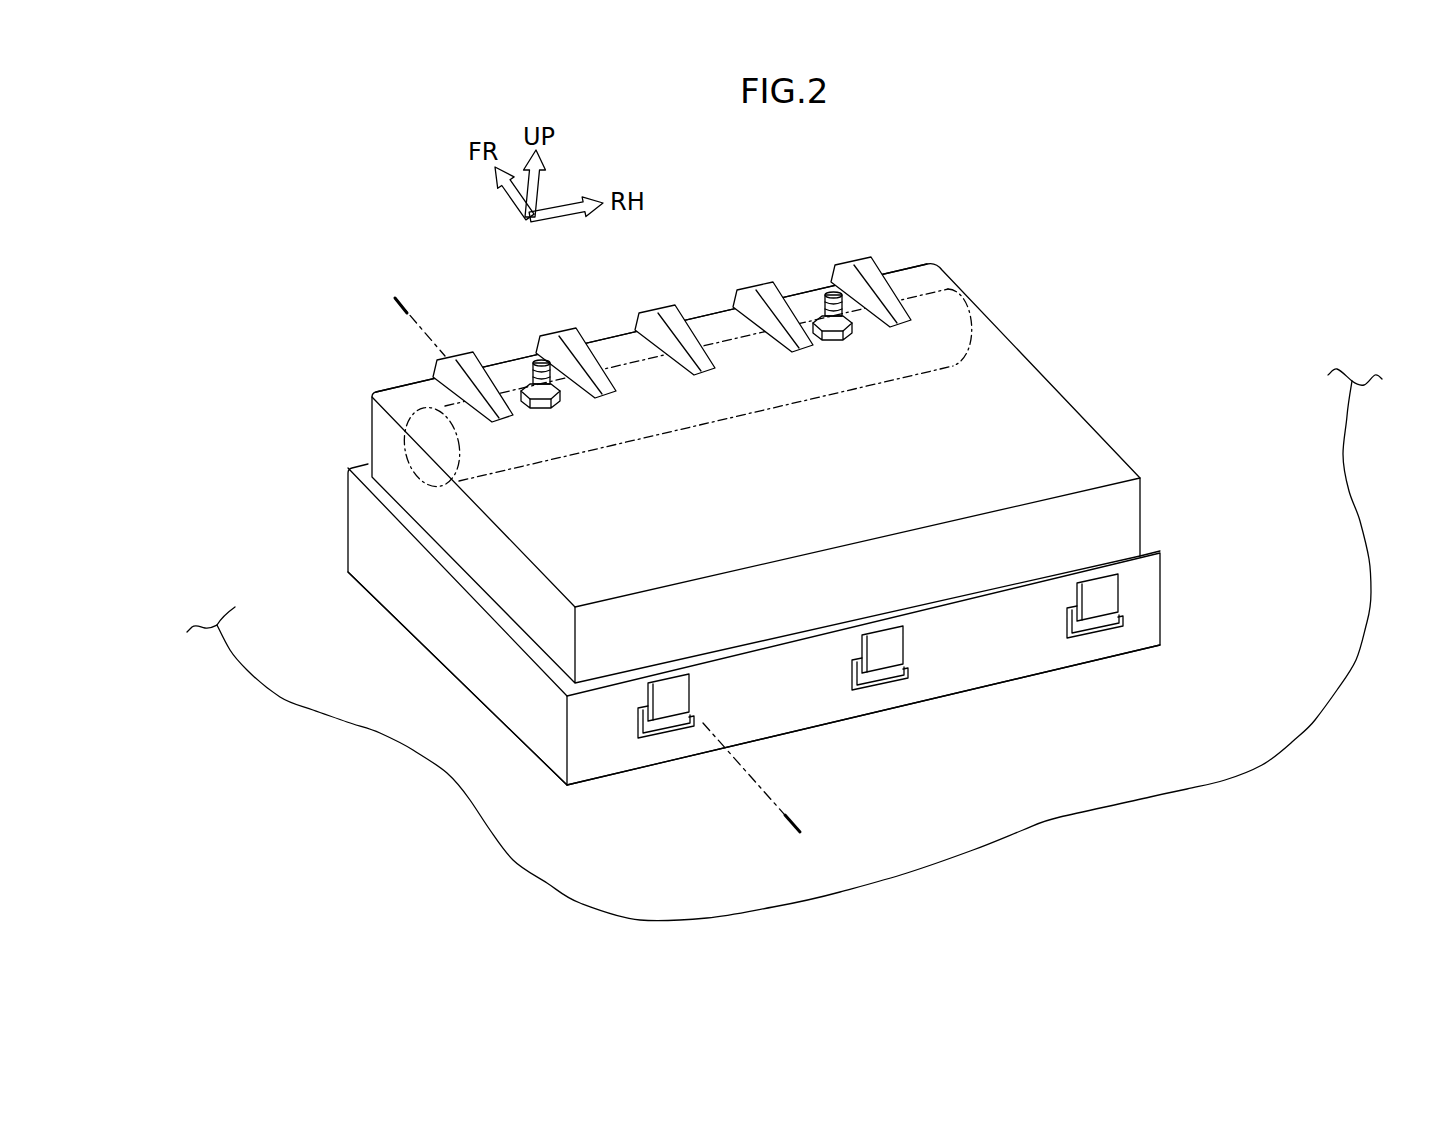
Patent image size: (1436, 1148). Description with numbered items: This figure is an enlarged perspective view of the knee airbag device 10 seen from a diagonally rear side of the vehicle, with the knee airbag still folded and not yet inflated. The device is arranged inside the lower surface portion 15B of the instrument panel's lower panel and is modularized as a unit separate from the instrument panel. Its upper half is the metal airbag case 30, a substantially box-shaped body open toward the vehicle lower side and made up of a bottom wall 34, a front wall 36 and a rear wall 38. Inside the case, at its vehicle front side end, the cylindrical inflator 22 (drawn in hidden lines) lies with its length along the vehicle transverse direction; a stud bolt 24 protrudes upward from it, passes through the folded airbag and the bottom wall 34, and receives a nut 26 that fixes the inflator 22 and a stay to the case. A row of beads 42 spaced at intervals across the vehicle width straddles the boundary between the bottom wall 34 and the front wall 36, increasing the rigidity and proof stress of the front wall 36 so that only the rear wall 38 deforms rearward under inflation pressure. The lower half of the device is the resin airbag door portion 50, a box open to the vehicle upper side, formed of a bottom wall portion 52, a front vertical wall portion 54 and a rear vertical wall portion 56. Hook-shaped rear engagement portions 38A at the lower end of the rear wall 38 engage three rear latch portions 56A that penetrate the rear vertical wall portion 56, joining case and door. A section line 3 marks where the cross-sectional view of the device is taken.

The section line of FIG. 3 is at (393, 308).
The knee airbag device 10 is at (1077, 210).
The lower surface portion 15B is at (1028, 812).
The inflator 22 is at (972, 318).
The stud bolt 24 is at (540, 358).
The nut 26 is at (557, 403).
The airbag case 30 is at (1048, 378).
The bottom wall 34 is at (1040, 440).
The front wall 36 is at (712, 312).
The rear wall 38 is at (840, 572).
The rear engagement portions 38A is at (672, 691).
The beads 42 is at (460, 350).
The airbag door portion 50 is at (1162, 568).
The bottom wall portion 52 is at (838, 688).
The front vertical wall portion 54 is at (352, 522).
The rear vertical wall portion 56 is at (1045, 672).
The rear latch portions 56A is at (668, 732).